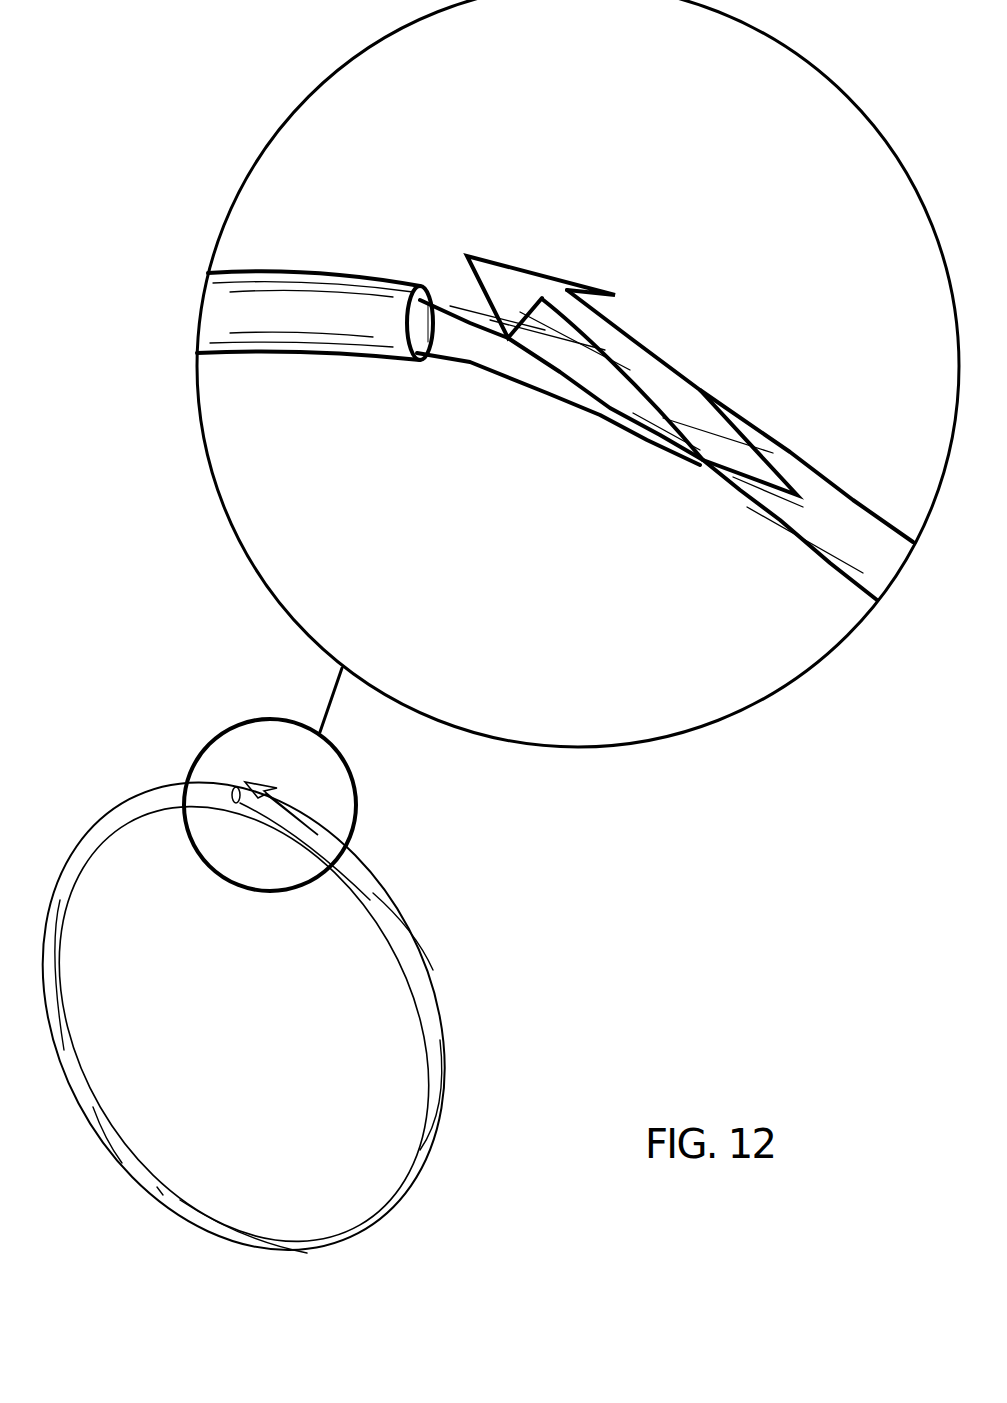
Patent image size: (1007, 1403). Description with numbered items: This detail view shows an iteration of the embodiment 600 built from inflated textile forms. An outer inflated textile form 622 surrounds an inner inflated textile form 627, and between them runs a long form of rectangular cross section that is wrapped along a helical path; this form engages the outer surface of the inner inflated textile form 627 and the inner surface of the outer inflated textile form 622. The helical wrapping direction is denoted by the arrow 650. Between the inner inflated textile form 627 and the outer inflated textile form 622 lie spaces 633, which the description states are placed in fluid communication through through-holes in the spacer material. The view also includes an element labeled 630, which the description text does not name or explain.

The embodiment 600 is at (177, 45).
The outer inflated textile form 622 is at (285, 307).
The inner inflated textile form 627 is at (462, 352).
The inner tube 630 is at (810, 473).
The spaces 633 is at (427, 327).
The arrow 650 is at (710, 448).